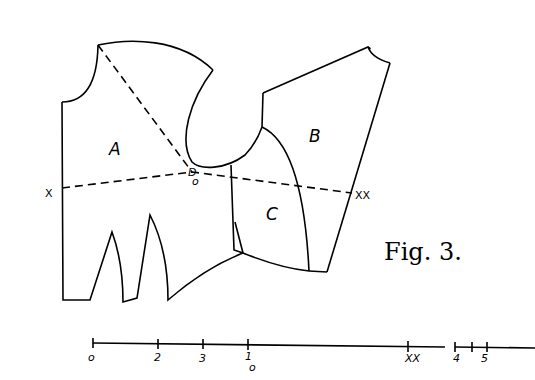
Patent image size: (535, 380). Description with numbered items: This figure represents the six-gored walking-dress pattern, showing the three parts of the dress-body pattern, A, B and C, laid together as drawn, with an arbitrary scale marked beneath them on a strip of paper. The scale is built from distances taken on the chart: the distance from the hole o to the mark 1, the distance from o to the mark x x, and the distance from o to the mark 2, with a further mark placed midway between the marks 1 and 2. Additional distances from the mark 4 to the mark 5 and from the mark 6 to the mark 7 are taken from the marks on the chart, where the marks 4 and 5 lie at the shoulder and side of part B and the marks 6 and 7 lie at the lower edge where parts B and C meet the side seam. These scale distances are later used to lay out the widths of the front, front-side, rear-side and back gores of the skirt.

The scale mark 1 is at (142, 102).
The scale mark 2 is at (207, 186).
The scale mark 4 is at (365, 164).
The scale mark 5 is at (326, 63).
The scale mark 6 is at (323, 278).
The scale mark 7 is at (297, 284).